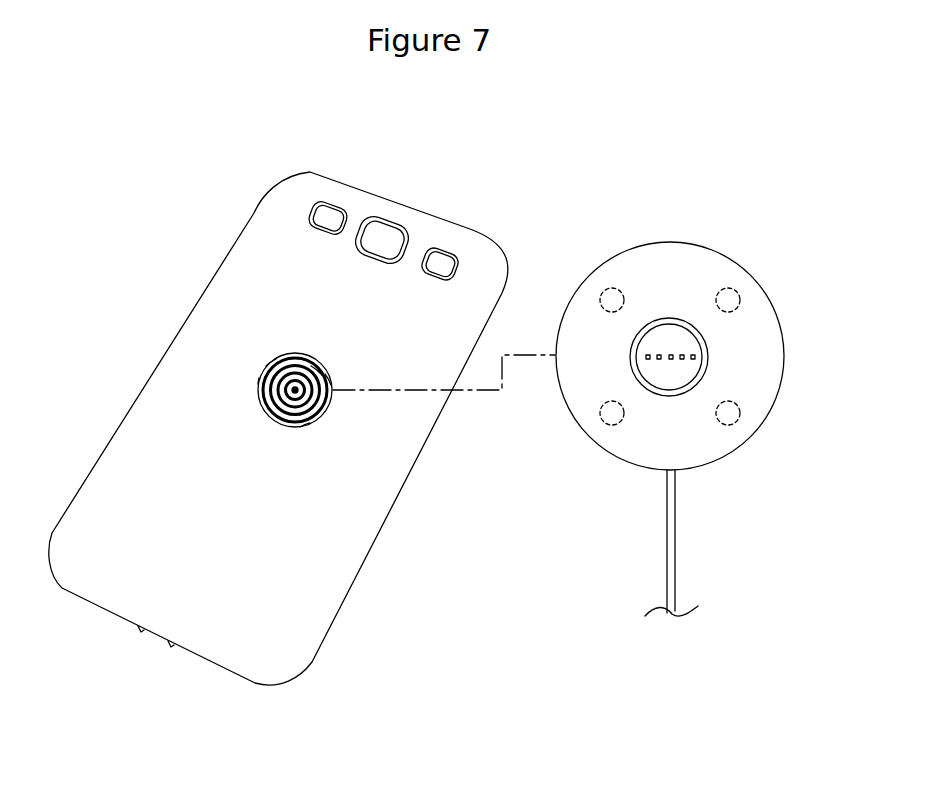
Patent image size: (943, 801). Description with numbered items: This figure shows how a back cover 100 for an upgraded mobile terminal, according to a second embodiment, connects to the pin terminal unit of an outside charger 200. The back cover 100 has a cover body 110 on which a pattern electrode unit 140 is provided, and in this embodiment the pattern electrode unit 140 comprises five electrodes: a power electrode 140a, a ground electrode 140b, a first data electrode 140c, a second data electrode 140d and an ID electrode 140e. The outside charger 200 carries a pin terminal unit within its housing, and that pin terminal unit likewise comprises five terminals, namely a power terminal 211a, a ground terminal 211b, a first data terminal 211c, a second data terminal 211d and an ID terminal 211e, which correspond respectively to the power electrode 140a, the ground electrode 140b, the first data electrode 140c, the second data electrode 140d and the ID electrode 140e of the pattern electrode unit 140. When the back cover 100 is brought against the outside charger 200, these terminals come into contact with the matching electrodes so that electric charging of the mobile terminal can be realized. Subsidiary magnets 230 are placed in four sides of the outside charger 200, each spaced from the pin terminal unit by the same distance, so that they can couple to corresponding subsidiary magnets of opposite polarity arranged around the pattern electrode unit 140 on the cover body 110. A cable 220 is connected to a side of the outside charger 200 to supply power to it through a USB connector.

The back cover 100 is at (417, 173).
The cover body 110 is at (218, 270).
The pattern electrode unit 140 is at (300, 395).
The power electrode 140a is at (313, 367).
The ground electrode 140b is at (280, 398).
The first data electrode 140c is at (290, 387).
The second data electrode 140d is at (280, 389).
The ID electrode 140e is at (327, 377).
The outside charger 200 is at (689, 234).
The power terminal 211a is at (671, 353).
The ground terminal 211b is at (647, 357).
The first data terminal 211c is at (659, 361).
The second data terminal 211d is at (682, 361).
The ID terminal 211e is at (693, 357).
The cable 220 is at (665, 578).
The subsidiary magnets 230 is at (738, 296).